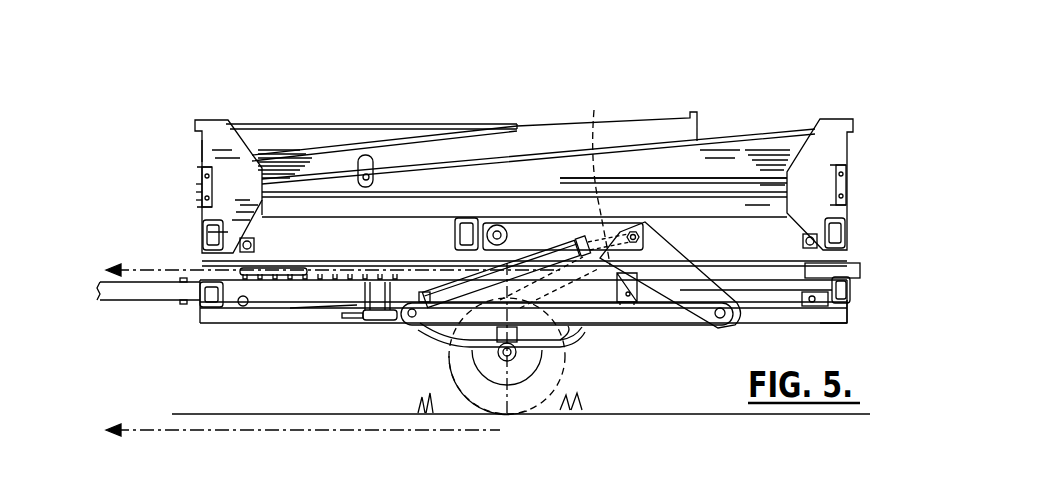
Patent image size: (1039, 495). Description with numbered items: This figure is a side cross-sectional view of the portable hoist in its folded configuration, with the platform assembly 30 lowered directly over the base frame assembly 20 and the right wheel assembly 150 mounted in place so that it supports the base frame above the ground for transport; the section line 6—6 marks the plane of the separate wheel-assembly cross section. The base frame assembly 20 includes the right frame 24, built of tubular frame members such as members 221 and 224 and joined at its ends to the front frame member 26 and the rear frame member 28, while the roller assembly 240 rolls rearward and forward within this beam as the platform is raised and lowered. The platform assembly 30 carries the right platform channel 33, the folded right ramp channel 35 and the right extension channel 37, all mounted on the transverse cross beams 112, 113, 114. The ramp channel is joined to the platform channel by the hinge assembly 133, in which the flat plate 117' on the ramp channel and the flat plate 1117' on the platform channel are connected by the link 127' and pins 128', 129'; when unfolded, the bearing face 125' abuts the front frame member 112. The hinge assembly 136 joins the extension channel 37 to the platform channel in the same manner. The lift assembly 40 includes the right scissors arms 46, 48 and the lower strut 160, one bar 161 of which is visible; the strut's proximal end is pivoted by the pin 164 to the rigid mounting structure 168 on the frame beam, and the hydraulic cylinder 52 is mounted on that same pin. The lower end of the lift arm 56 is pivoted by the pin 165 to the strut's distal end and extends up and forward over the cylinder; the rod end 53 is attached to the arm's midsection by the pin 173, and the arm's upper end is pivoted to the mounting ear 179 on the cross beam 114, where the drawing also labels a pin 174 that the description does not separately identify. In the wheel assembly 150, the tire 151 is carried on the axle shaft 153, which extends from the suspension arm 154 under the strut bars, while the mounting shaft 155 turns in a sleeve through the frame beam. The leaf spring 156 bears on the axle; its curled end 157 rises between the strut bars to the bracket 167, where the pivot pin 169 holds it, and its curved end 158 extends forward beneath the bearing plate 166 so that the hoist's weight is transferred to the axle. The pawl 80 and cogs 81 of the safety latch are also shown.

The section line 6- 6 is at (322, 349).
The base frame assembly 20 is at (282, 334).
The right frame 24 is at (212, 331).
The front frame member 26 is at (200, 300).
The rear frame member 28 is at (850, 290).
The platform assembly 30 is at (372, 227).
The right platform channel 33 is at (336, 178).
The right ramp channel 35 is at (265, 160).
The right extension channel 37 is at (744, 152).
The lift assembly 40 is at (620, 210).
The scissors arm 46 is at (747, 315).
The scissors arm 48 is at (357, 305).
The hydraulic cylinder 52 is at (450, 282).
The rod end 53 is at (588, 178).
The lift arm 56 is at (590, 300).
The pawl 80 is at (280, 268).
The cogs 81 is at (356, 275).
The front frame member 112 is at (199, 240).
The transverse cross beam frame member 113 is at (848, 228).
The transverse cross-beam 114 is at (465, 218).
The flat plate 117' is at (228, 156).
The flat plate 1117' is at (284, 139).
The bearing face 125' is at (129, 129).
The link 127' is at (129, 197).
The pin 128' is at (129, 172).
The pin 129' is at (129, 218).
The hinge assembly 133 is at (194, 168).
The hinge assembly 136 is at (851, 172).
The wheel assembly 150 is at (560, 410).
The tire 151 is at (533, 405).
The axle shaft 153 is at (470, 350).
The suspension arm 154 is at (520, 355).
The mounting shaft 155 is at (566, 326).
The spring 156 is at (470, 350).
The curled end 157 is at (642, 330).
The curved end 158 is at (420, 337).
The lower strut 160 is at (640, 312).
The bar 161 is at (645, 323).
The pin 164 is at (382, 335).
The pin 165 is at (738, 316).
The bearing plate 166 is at (380, 348).
The bracket 167 is at (658, 327).
The rigid mounting structure 168 is at (390, 325).
The pivot pin 169 is at (640, 292).
The pin 173 is at (500, 230).
The link pin 174 is at (641, 235).
The mounting ear 179 is at (491, 226).
The tubular frame member 221 is at (808, 272).
The tubular frame member 224 is at (833, 323).
The roller assembly 240 is at (242, 306).